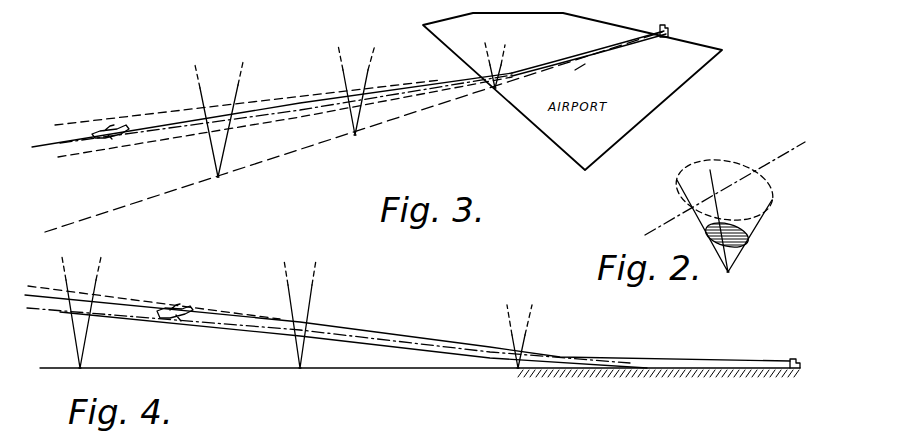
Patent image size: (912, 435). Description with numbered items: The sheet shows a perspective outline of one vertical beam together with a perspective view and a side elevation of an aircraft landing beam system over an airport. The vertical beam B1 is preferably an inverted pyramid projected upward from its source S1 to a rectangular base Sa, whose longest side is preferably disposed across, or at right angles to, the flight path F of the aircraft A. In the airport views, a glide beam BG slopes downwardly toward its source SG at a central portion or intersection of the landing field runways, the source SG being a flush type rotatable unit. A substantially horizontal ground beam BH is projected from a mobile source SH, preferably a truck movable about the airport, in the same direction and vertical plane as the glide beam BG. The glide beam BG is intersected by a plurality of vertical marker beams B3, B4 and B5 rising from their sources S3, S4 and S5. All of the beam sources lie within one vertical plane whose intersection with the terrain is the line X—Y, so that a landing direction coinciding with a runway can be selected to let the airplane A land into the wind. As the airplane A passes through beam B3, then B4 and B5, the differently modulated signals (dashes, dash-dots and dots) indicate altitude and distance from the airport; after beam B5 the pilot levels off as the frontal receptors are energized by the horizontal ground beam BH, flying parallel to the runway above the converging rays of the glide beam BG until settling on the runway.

In FIG. 2, the flight path F is at (669, 221).
In FIG. 3, the flight path F is at (48, 143).
In FIG. 4, the flight path F is at (246, 288).
In FIG. 3, the aircraft A is at (107, 126).
In FIG. 4, the aircraft A is at (188, 291).
In FIG. 3, the glide beam BG is at (167, 117).
In FIG. 3, the horizontal ground beam BH is at (588, 50).
In FIG. 4, the horizontal ground beam BH is at (648, 357).
In FIG. 2, the vertical beam B1 is at (736, 171).
In FIG. 3, the vertical marker beam B3 is at (219, 116).
In FIG. 4, the vertical marker beam B3 is at (81, 312).
In FIG. 3, the vertical marker beam B4 is at (356, 87).
In FIG. 4, the vertical marker beam B4 is at (300, 314).
In FIG. 3, the vertical marker beam B5 is at (496, 54).
In FIG. 4, the vertical marker beam B5 is at (519, 326).
In FIG. 2, the beam source S1 is at (725, 285).
In FIG. 3, the beam source S3 is at (214, 191).
In FIG. 4, the beam source S3 is at (80, 371).
In FIG. 3, the beam source S4 is at (357, 149).
In FIG. 4, the beam source S4 is at (298, 381).
In FIG. 3, the beam source S5 is at (487, 102).
In FIG. 4, the beam source S5 is at (510, 382).
In FIG. 2, the rectangular base Sa is at (748, 237).
In FIG. 3, the glide beam source SG is at (580, 67).
In FIG. 4, the glide beam source SG is at (660, 371).
In FIG. 3, the ground beam source SH is at (666, 24).
In FIG. 4, the ground beam source SH is at (790, 358).
In FIG. 3, the landing direction line end X is at (342, 140).
In FIG. 3, the landing direction line end Y is at (688, 36).